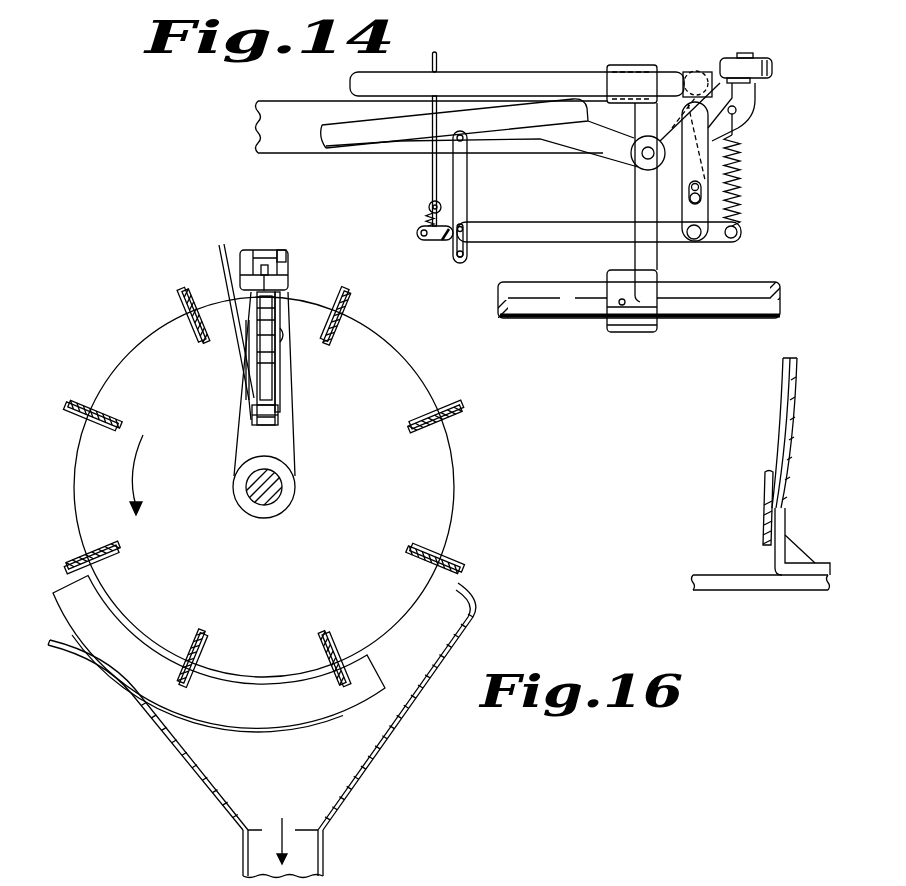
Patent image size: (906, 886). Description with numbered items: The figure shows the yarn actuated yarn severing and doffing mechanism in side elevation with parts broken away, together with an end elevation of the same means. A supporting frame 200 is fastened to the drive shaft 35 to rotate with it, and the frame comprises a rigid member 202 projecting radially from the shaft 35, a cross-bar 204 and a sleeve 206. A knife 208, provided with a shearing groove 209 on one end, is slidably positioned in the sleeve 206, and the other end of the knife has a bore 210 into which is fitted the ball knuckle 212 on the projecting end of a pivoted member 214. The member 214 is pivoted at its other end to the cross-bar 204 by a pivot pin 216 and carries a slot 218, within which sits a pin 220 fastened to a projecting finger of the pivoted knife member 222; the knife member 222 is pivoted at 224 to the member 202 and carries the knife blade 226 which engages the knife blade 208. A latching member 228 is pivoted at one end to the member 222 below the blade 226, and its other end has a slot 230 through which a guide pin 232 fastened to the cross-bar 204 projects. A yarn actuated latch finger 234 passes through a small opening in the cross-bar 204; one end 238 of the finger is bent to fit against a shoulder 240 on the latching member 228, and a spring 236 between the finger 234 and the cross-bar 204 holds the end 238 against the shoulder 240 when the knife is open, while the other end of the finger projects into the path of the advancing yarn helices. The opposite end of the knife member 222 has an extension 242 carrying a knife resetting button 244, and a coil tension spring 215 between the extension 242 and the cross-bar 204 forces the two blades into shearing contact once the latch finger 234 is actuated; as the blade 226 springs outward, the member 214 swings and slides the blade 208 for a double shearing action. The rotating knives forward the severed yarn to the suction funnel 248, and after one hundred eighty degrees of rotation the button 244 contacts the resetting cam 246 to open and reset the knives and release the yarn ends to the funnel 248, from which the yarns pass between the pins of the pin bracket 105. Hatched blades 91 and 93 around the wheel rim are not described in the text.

In FIG. 14, the drive shaft 35 is at (706, 320).
In FIG. 16, the drive shaft 35 is at (283, 490).
In FIG. 16, the blade 91 is at (199, 292).
In FIG. 14, the blade mounting plate 93 is at (280, 145).
In FIG. 16, the blade mounting plate 93 is at (177, 303).
In FIG. 16, the pin bracket 105 is at (728, 575).
In FIG. 14, the supporting frame 200 is at (643, 317).
In FIG. 14, the rigid member 202 is at (637, 206).
In FIG. 16, the rigid member 202 is at (285, 434).
In FIG. 14, the cross-bar 204 is at (593, 238).
In FIG. 16, the cross-bar 204 is at (262, 422).
In FIG. 14, the sleeve 206 is at (622, 70).
In FIG. 16, the sleeve 206 is at (289, 255).
In FIG. 14, the knife 208 is at (527, 72).
In FIG. 16, the knife 208 is at (250, 258).
In FIG. 16, the shearing groove 209 is at (263, 265).
In FIG. 14, the bore 210 is at (700, 70).
In FIG. 14, the ball knuckle 212 is at (690, 72).
In FIG. 14, the pivoted member 214 is at (703, 160).
In FIG. 14, the coil tension spring 215 is at (735, 141).
In FIG. 14, the pivot pin 216 is at (698, 239).
In FIG. 14, the slot 218 is at (700, 203).
In FIG. 14, the pin 220 is at (698, 192).
In FIG. 14, the knife member 222 is at (606, 148).
In FIG. 16, the knife member 222 is at (272, 318).
In FIG. 14, the pivot 224 is at (644, 158).
In FIG. 14, the knife blade 226 is at (372, 124).
In FIG. 16, the knife blade 226 is at (284, 257).
In FIG. 14, the latching member 228 is at (468, 172).
In FIG. 16, the latching member 228 is at (281, 378).
In FIG. 14, the slot 230 is at (468, 256).
In FIG. 14, the guide pin 232 is at (465, 230).
In FIG. 14, the latch finger 234 is at (432, 158).
In FIG. 14, the spring 236 is at (428, 211).
In FIG. 14, the end of latch finger 238 is at (440, 240).
In FIG. 14, the shoulder 240 is at (447, 240).
In FIG. 14, the extension 242 is at (750, 108).
In FIG. 14, the knife resetting button 244 is at (768, 46).
In FIG. 16, the resetting cam 246 is at (265, 688).
In FIG. 16, the suction funnel 248 is at (364, 778).